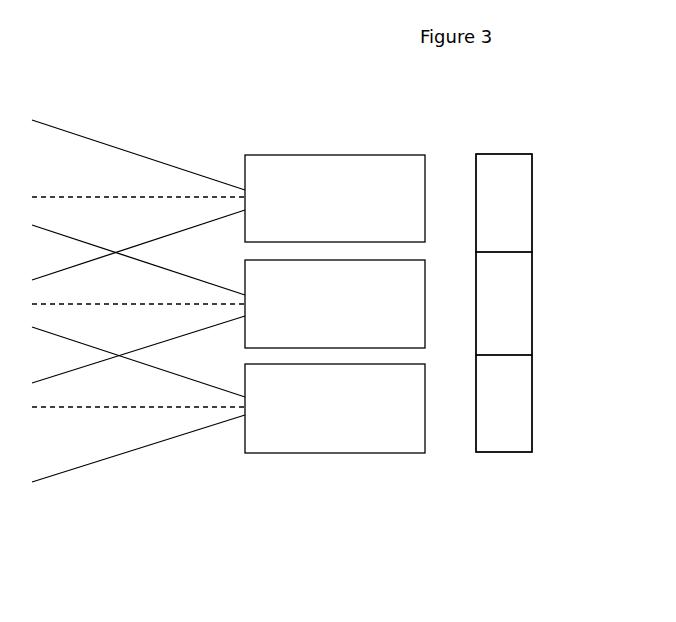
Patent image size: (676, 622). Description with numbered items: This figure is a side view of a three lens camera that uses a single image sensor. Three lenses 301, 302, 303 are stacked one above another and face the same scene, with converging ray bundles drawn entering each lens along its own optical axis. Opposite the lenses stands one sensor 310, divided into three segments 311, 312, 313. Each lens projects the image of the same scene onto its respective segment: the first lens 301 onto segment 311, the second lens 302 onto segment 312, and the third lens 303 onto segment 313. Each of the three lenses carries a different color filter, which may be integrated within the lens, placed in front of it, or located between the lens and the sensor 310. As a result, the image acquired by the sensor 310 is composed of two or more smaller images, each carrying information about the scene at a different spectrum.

The lens 301 is at (317, 155).
The lens 302 is at (423, 330).
The lens 303 is at (300, 453).
The sensor 310 is at (556, 370).
The sensor segment 311 is at (532, 222).
The sensor segment 312 is at (532, 327).
The sensor segment 313 is at (532, 410).